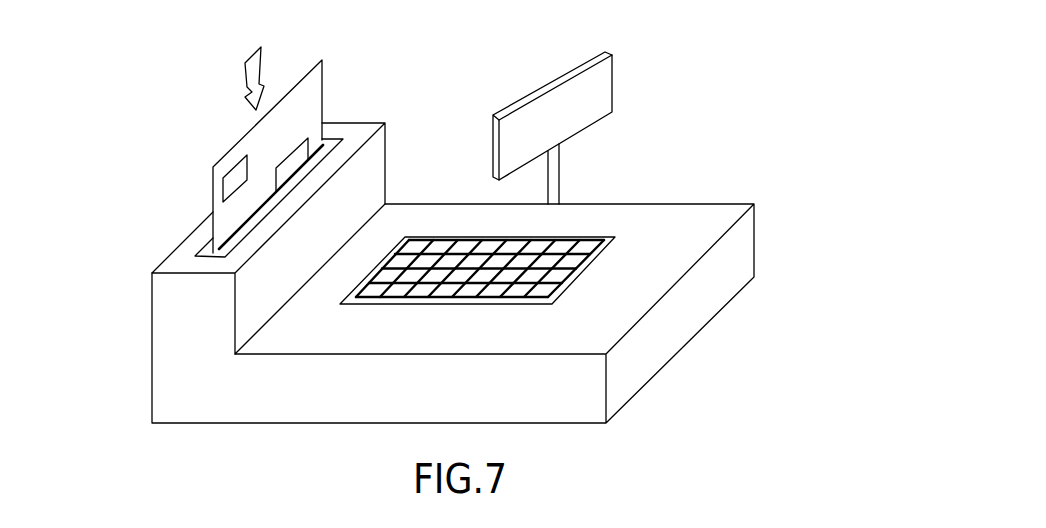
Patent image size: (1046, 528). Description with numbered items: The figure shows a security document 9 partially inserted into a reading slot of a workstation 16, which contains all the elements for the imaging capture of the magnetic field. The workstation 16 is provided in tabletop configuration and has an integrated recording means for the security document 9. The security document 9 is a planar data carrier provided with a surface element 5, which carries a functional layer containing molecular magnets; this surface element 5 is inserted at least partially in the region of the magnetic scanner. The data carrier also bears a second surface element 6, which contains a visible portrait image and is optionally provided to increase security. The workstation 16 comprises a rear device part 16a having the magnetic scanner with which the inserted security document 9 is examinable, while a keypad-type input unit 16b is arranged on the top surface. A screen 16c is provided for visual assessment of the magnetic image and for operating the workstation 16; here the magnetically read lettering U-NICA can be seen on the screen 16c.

The surface element 5 is at (298, 152).
The second surface element 6 is at (237, 173).
The security document 9 is at (298, 83).
The workstation 16 is at (725, 287).
The rear device part 16a is at (167, 328).
The keypad / sensor grid 16b is at (605, 237).
The screen 16c is at (593, 107).